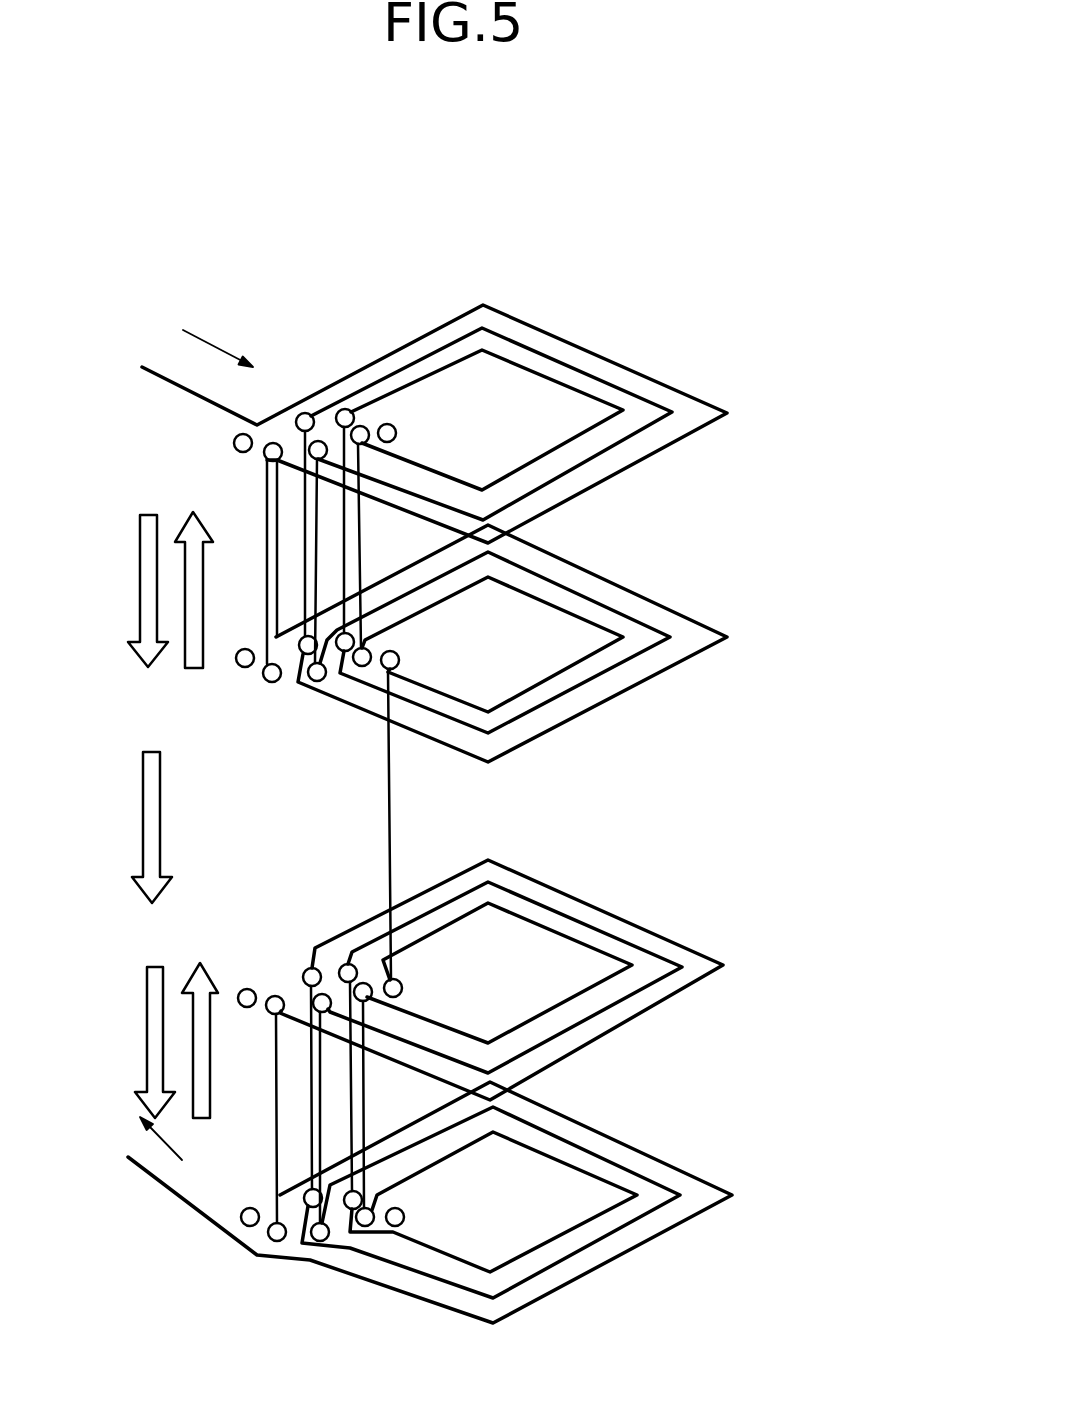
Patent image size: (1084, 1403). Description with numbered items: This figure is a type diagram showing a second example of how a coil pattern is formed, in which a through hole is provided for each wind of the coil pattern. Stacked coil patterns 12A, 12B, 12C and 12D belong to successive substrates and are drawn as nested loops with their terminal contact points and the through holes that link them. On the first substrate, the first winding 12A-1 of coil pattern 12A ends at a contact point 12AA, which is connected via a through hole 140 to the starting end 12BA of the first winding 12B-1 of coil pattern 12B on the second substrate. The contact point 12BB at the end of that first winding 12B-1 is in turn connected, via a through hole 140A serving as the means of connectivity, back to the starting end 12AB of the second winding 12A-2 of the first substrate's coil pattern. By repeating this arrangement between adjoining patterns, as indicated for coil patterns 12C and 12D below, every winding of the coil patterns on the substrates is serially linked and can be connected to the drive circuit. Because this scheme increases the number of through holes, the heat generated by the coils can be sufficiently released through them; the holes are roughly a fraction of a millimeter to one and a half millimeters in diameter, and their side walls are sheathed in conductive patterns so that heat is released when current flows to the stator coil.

The coil pattern 12A is at (480, 348).
The contact point 12AA is at (273, 434).
The starting end 12AB is at (311, 413).
The first winding 12A-1 is at (670, 453).
The second winding 12A-2 is at (622, 388).
The through hole 140 is at (265, 485).
The through hole 140A is at (265, 547).
The coil pattern 12B is at (539, 672).
The first winding 12B-1 is at (700, 612).
The starting end 12BA is at (271, 684).
The contact point 12BB is at (300, 655).
The coil pattern 12C is at (703, 930).
The coil pattern 12D is at (686, 1143).